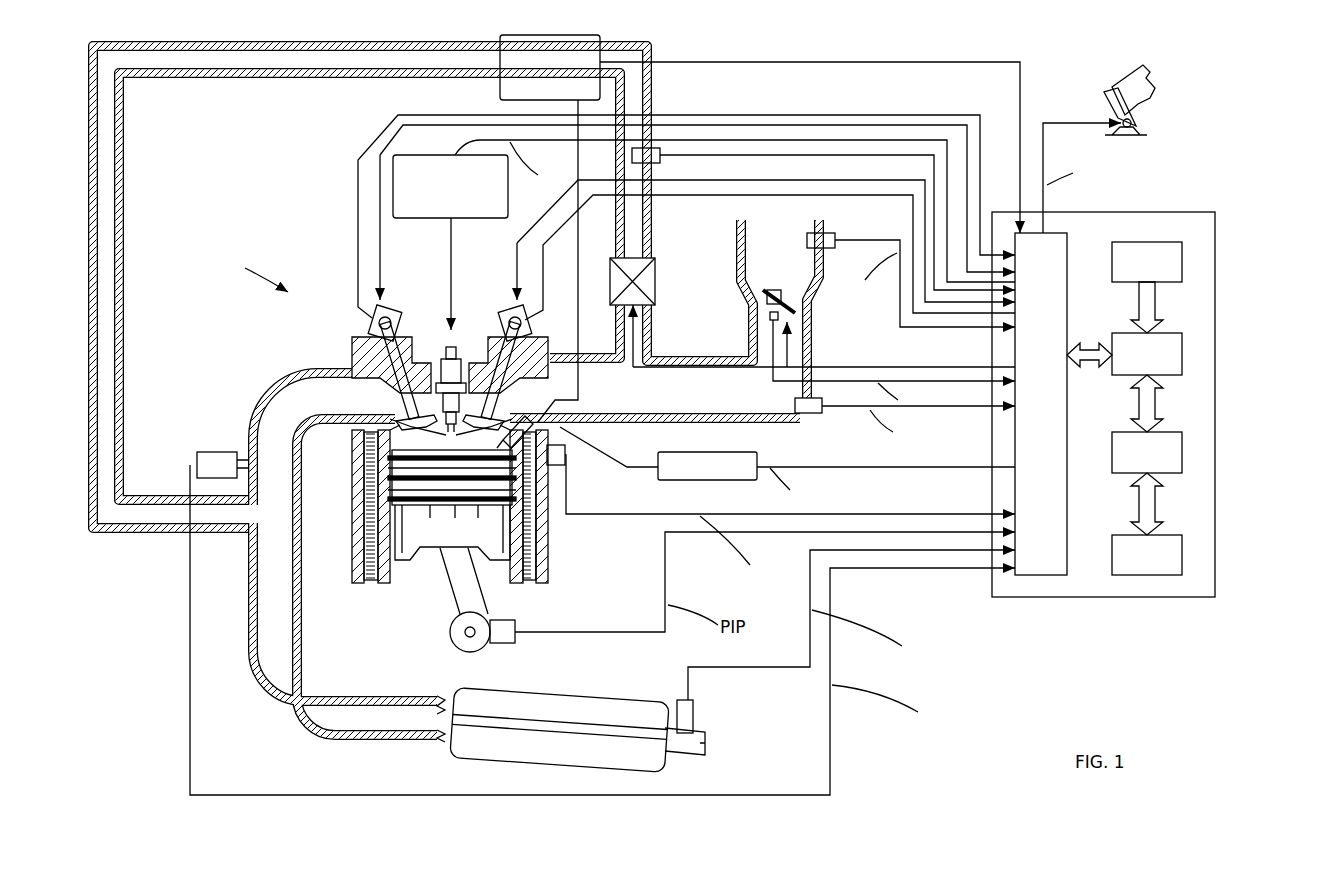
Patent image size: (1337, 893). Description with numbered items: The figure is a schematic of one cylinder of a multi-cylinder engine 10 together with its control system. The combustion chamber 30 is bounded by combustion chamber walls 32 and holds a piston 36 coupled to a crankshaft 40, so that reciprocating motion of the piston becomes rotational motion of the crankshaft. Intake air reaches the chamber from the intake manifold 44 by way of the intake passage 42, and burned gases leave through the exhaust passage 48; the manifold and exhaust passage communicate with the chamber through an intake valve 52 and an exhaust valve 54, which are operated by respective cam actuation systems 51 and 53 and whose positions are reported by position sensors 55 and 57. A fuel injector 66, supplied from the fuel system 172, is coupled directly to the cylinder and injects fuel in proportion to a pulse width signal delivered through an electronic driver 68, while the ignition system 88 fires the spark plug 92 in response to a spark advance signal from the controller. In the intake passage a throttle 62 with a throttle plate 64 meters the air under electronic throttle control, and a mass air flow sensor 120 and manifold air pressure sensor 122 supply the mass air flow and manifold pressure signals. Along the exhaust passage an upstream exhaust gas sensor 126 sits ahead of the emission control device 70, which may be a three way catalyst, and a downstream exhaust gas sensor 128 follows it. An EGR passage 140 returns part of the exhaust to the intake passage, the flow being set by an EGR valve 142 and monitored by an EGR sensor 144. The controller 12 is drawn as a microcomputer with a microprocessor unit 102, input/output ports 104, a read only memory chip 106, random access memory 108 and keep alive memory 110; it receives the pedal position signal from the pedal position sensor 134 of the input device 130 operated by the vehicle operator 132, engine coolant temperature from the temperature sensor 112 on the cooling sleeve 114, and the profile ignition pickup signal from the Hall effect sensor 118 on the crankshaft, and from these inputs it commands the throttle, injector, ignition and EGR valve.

The engine 10 is at (254, 270).
The controller 12 is at (1212, 212).
The combustion chamber 30 is at (355, 548).
The combustion chamber walls 32 is at (395, 573).
The piston 36 is at (432, 573).
The crankshaft 40 is at (455, 650).
The intake passage 42 is at (790, 273).
The intake manifold 44 is at (727, 403).
The exhaust passage 48 is at (334, 406).
The cam actuation system 51 is at (503, 302).
The intake valve 52 is at (520, 402).
The cam actuation system 53 is at (397, 302).
The exhaust valve 54 is at (352, 378).
The position sensor 55 is at (522, 326).
The position sensor 57 is at (376, 322).
The throttle 62 is at (795, 300).
The throttle plate 64 is at (765, 296).
The fuel injector 66 is at (550, 432).
The electronic driver 68 is at (668, 480).
The emission control device 70 is at (632, 700).
The ignition system 88 is at (405, 156).
The spark plug 92 is at (456, 345).
The microprocessor unit 102 is at (1185, 350).
The input/output ports 104 is at (1072, 238).
The read only memory chip 106 is at (1185, 260).
The random access memory 108 is at (1185, 450).
The keep alive memory 110 is at (1185, 552).
The temperature sensor 112 is at (565, 465).
The cooling sleeve 114 is at (545, 540).
The Hall effect sensor 118 is at (510, 645).
The mass air flow sensor 120 is at (835, 235).
The manifold air pressure sensor 122 is at (818, 415).
The upstream exhaust gas sensor 126 is at (197, 460).
The downstream exhaust gas sensor 128 is at (695, 712).
The input device 130 is at (1105, 100).
The vehicle operator 132 is at (1152, 75).
The pedal position sensor 134 is at (1142, 125).
The EGR passage 140 is at (358, 44).
The EGR valve 142 is at (655, 287).
The EGR sensor 144 is at (650, 163).
The fuel system 172 is at (560, 35).